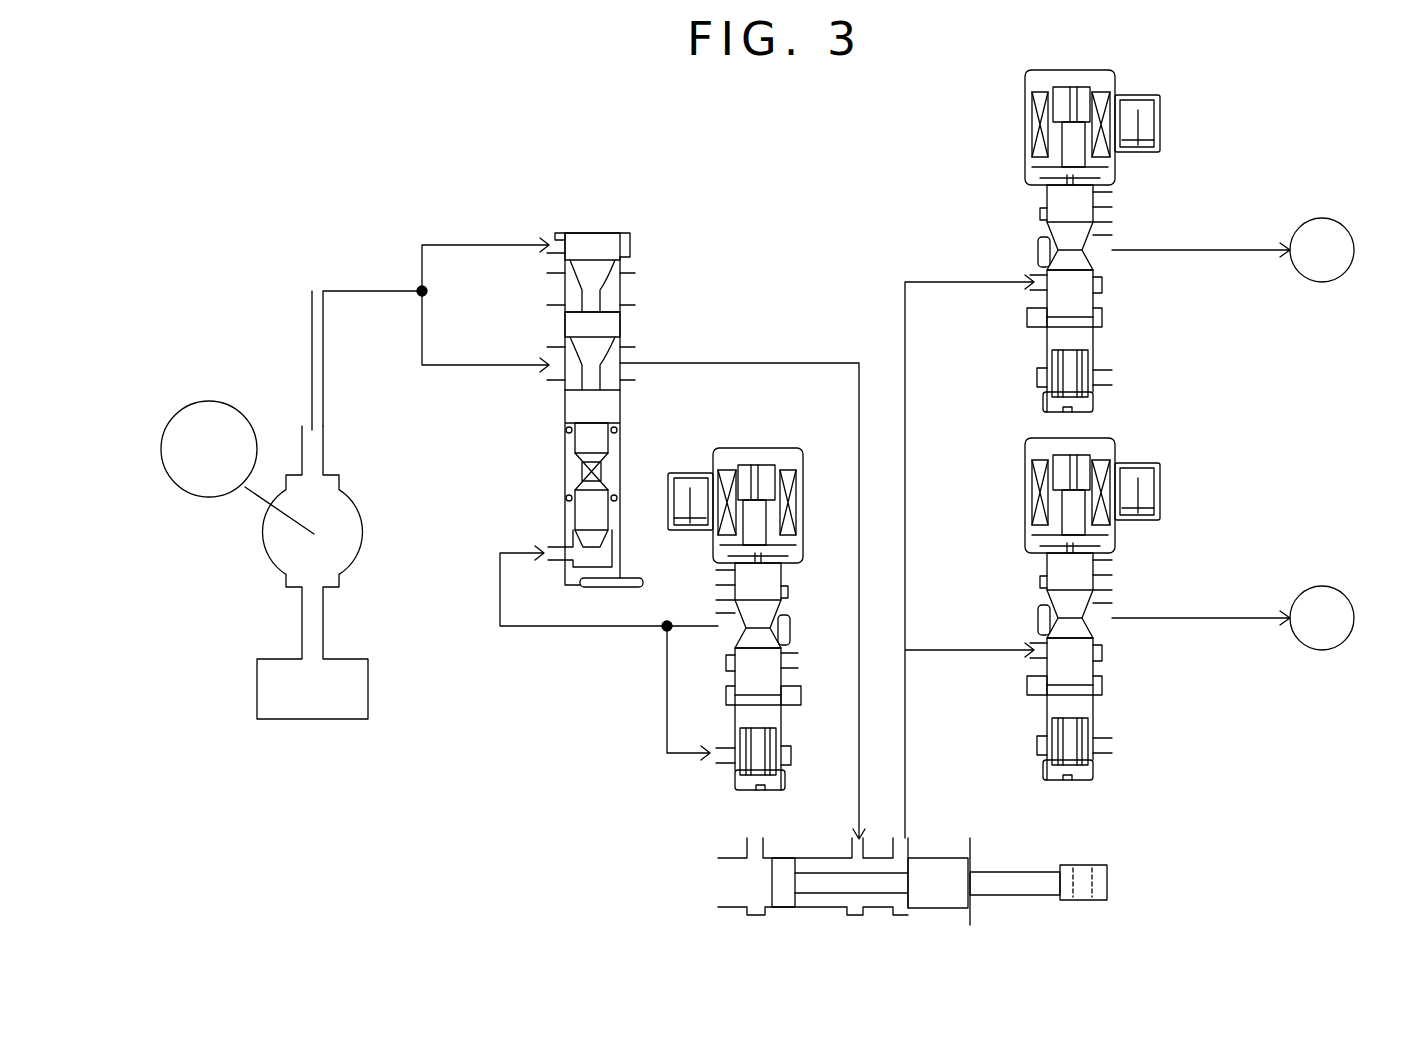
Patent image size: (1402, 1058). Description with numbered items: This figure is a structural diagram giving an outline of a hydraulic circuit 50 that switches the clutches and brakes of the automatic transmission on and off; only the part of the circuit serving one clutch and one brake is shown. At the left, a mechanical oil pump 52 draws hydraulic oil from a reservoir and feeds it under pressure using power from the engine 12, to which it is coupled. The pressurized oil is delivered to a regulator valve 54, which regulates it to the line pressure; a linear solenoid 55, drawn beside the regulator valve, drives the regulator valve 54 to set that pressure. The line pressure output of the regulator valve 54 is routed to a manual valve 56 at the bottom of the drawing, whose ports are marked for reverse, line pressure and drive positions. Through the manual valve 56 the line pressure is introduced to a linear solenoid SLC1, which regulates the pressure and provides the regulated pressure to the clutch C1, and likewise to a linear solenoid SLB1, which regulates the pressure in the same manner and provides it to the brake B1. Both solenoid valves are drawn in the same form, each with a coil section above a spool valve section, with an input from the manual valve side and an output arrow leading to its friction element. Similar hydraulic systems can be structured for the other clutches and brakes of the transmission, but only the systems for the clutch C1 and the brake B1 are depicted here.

The engine 12 is at (205, 401).
The hydraulic circuit 50 is at (692, 146).
The mechanical oil pump 52 is at (362, 526).
The regulator valve 54 is at (628, 283).
The linear solenoid 55 is at (755, 447).
The manual valve 56 is at (938, 858).
The linear solenoid SLB1 is at (1163, 122).
The linear solenoid SLC1 is at (1163, 484).
The brake B1 is at (1233, 250).
The clutch C1 is at (1233, 618).